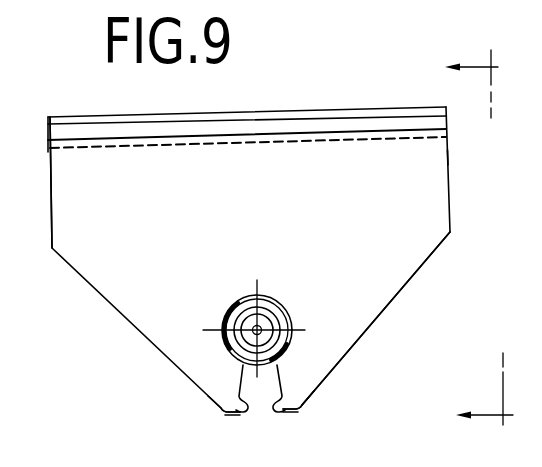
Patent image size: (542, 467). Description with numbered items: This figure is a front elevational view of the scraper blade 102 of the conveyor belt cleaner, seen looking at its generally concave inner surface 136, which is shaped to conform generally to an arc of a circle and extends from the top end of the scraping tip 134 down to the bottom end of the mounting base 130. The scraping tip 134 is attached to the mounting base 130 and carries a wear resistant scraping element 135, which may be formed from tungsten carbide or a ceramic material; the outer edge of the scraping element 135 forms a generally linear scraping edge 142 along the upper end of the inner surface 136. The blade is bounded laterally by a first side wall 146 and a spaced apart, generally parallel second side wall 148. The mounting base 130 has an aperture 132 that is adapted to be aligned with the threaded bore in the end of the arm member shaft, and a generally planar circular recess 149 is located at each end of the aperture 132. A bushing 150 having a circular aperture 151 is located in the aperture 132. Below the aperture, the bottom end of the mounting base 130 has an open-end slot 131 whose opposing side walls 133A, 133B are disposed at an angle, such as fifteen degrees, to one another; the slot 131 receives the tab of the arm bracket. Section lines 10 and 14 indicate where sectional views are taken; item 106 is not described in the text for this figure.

The scraper blade 102 is at (372, 72).
The section line 10- 10 is at (491, 237).
The section line 14 is at (533, 31).
The first side wall 146 is at (50, 182).
The scraping edge 142 is at (182, 120).
The scraping element 135 is at (278, 127).
The second side wall 148 is at (449, 158).
The inner surface 136 is at (409, 188).
The scraping tip 134 is at (465, 213).
The mounting base 130 is at (402, 311).
The side wall of slot 133A is at (235, 414).
The side wall of slot 133B is at (301, 416).
The open-end slot 131 is at (262, 403).
The bushing 150 is at (222, 311).
The bushing 106 is at (294, 305).
The aperture 132 is at (291, 341).
The circular recess 149 is at (293, 362).
The circular aperture 151 is at (259, 327).